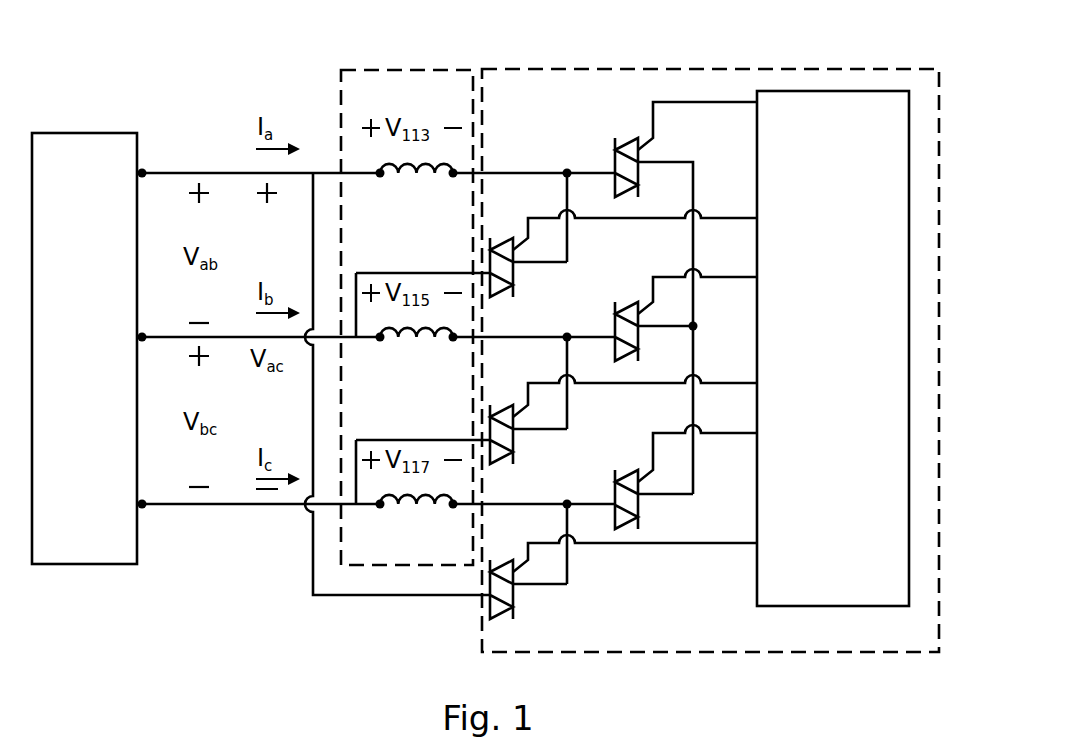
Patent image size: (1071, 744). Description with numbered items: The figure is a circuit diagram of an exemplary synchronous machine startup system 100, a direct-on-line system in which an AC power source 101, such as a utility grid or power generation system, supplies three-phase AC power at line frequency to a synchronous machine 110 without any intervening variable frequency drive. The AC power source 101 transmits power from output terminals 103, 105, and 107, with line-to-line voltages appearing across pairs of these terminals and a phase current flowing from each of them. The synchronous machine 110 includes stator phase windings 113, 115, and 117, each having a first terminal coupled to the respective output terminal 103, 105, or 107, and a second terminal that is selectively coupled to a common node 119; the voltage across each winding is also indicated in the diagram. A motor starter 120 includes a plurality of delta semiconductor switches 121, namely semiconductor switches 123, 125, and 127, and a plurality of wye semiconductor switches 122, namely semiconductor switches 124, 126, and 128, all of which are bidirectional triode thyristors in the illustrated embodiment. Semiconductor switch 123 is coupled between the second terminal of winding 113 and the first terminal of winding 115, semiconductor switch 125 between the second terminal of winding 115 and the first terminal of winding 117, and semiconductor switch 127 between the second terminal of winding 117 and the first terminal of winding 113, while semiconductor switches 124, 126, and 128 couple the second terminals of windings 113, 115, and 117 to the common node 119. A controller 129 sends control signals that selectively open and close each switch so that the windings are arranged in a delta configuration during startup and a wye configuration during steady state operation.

The synchronous machine startup system 100 is at (205, 40).
The AC power source 101 is at (90, 133).
The output terminal 103 is at (145, 178).
The output terminal 105 is at (145, 342).
The output terminal 107 is at (145, 509).
The synchronous machine 110 is at (385, 69).
The stator phase winding 113 is at (410, 178).
The stator phase winding 115 is at (410, 342).
The stator phase winding 117 is at (410, 509).
The common node 119 is at (697, 325).
The motor starter 120 is at (533, 69).
The plurality of delta semiconductor switches 121 is at (623, 406).
The plurality of wye semiconductor switches 122 is at (685, 344).
The semiconductor switch 123 is at (496, 240).
The semiconductor switch 124 is at (620, 142).
The semiconductor switch 125 is at (496, 407).
The semiconductor switch 126 is at (620, 306).
The semiconductor switch 127 is at (496, 562).
The semiconductor switch 128 is at (620, 472).
The controller 129 is at (838, 91).